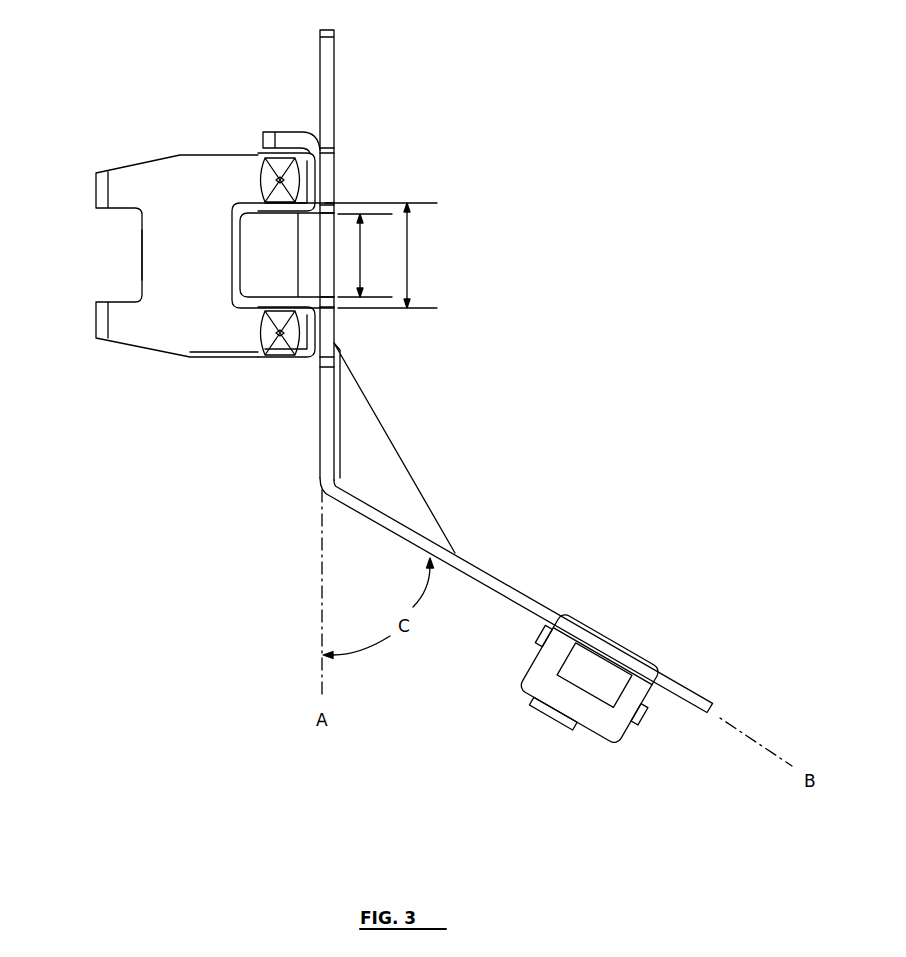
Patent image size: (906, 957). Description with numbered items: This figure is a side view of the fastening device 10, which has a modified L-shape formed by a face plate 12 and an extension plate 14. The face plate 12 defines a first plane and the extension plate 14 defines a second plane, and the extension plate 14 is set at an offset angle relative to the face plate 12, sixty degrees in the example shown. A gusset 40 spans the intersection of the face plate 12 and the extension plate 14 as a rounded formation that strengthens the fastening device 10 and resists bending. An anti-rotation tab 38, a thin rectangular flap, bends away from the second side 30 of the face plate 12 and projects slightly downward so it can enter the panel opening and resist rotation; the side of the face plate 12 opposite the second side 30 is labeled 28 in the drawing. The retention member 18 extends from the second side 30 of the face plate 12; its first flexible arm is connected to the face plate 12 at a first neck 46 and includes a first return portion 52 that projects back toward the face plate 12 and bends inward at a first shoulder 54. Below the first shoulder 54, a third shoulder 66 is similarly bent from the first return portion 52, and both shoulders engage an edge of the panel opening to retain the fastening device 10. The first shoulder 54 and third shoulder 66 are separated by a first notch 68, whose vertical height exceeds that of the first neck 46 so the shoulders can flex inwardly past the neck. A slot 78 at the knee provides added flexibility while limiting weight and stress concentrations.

The fastening device 10 is at (516, 147).
The face plate 12 is at (345, 117).
The extension plate 14 is at (522, 578).
The retention member 18 is at (172, 145).
The first leg 28 is at (335, 87).
The second side 30 is at (320, 80).
The anti-rotation tab 38 is at (290, 133).
The gusset 40 is at (380, 452).
The first neck 46 is at (313, 240).
The first return portion 52 is at (182, 328).
The first shoulder 54 is at (75, 150).
The third shoulder 66 is at (307, 332).
The first notch 68 is at (322, 206).
The slot 78 is at (75, 237).